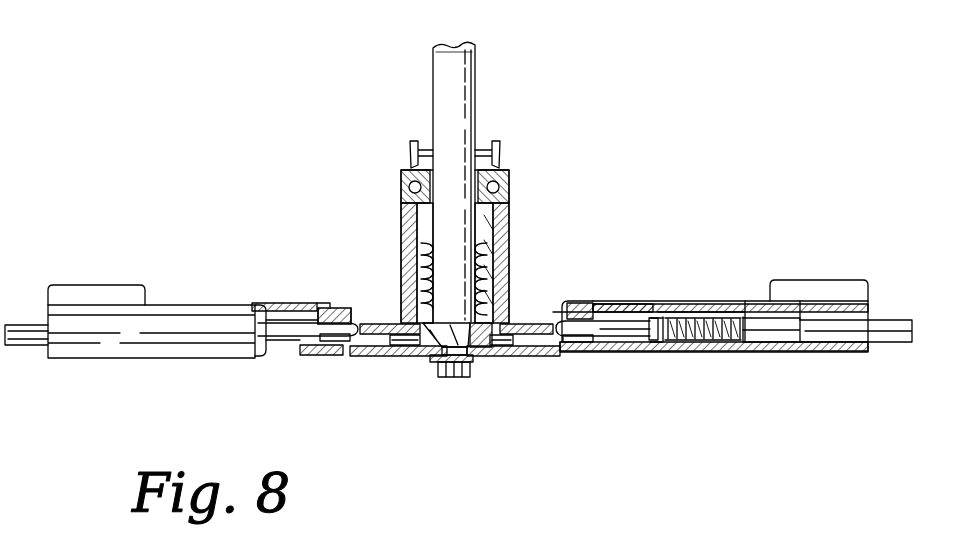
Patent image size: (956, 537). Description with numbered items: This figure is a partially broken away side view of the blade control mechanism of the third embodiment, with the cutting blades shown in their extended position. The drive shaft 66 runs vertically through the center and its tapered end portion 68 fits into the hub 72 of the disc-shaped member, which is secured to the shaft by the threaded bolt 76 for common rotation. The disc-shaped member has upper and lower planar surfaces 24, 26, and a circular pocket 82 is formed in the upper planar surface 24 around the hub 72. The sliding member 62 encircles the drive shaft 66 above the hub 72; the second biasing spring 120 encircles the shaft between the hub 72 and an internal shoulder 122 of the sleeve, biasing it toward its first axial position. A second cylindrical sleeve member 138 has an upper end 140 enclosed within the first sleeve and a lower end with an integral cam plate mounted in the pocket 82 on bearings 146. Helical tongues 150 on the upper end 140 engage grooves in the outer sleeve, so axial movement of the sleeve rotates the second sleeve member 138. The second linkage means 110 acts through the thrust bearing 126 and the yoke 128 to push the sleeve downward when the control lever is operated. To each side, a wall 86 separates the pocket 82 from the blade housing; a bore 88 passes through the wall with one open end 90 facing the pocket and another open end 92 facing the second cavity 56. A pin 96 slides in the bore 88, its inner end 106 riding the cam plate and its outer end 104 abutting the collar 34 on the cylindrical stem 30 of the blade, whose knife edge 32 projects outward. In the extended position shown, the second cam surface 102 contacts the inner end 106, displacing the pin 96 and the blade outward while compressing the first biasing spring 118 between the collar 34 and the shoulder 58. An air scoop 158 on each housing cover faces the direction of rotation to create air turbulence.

The upper planar surface 24 is at (760, 345).
The lower planar surface 26 is at (138, 358).
The cylindrical stem 30 is at (700, 342).
The knife edge 32 is at (35, 352).
The collar 34 is at (222, 304).
The second cavity 56 is at (746, 301).
The shoulder 58 is at (805, 300).
The sliding member 62 is at (512, 181).
The drive shaft 66 is at (446, 52).
The tapered end portion 68 is at (440, 358).
The hub 72 is at (480, 355).
The threaded bolt 76 is at (450, 378).
The circular pocket 82 is at (380, 322).
The wall 86 is at (308, 358).
The bore 88 is at (282, 357).
The open end 90 is at (337, 308).
The open end 92 is at (310, 306).
The pin 96 is at (252, 352).
The second cam surface 102 is at (362, 358).
The outer end 104 is at (272, 303).
The inner end 106 is at (345, 352).
The second linkage means 110 is at (480, 70).
The first biasing spring 118 is at (685, 312).
The second biasing spring 120 is at (467, 305).
The internal shoulder 122 is at (417, 257).
The thrust bearing 126 is at (403, 182).
The yoke 128 is at (496, 146).
The second cylindrical sleeve member 138 is at (496, 244).
The upper end 140 is at (401, 203).
The bearings 146 is at (405, 347).
The tongues 150 is at (509, 217).
The air scoop 158 is at (108, 285).